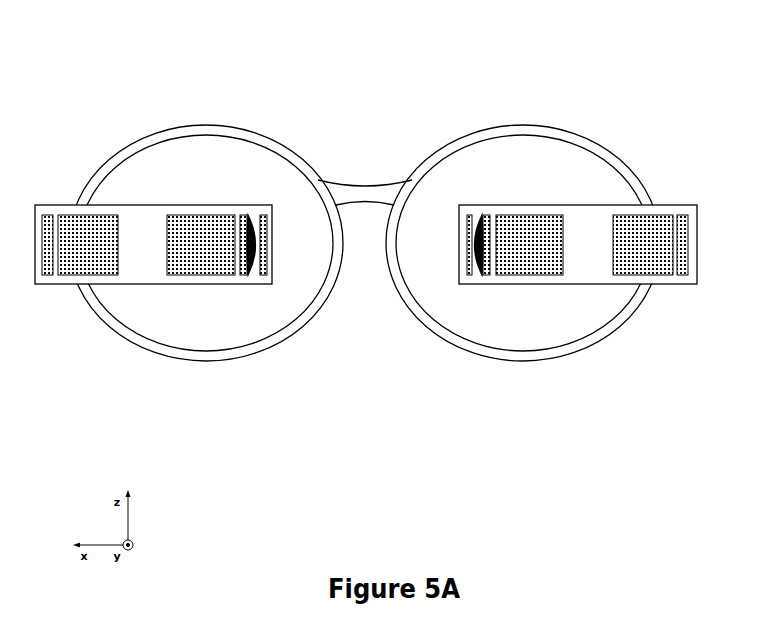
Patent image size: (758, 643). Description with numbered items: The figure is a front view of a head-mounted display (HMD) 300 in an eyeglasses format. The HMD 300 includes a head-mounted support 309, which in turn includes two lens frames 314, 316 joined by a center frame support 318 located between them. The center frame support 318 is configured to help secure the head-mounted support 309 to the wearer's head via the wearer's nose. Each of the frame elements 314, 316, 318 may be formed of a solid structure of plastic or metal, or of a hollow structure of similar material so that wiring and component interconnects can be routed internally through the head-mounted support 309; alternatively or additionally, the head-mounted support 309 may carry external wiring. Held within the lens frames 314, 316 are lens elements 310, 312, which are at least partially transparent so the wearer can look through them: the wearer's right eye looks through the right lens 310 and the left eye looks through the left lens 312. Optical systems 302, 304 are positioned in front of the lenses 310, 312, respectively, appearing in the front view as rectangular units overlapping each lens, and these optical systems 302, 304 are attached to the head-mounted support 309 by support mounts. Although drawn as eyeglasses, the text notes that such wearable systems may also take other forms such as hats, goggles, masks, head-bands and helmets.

The head-mounted display 300 is at (368, 358).
The optical system 302 is at (118, 205).
The optical system 304 is at (603, 205).
The head-mounted support 309 is at (291, 106).
The lens element 310 is at (228, 345).
The lens element 312 is at (532, 347).
The lens frame 314 is at (110, 335).
The lens frame 316 is at (628, 330).
The center frame support 318 is at (390, 182).